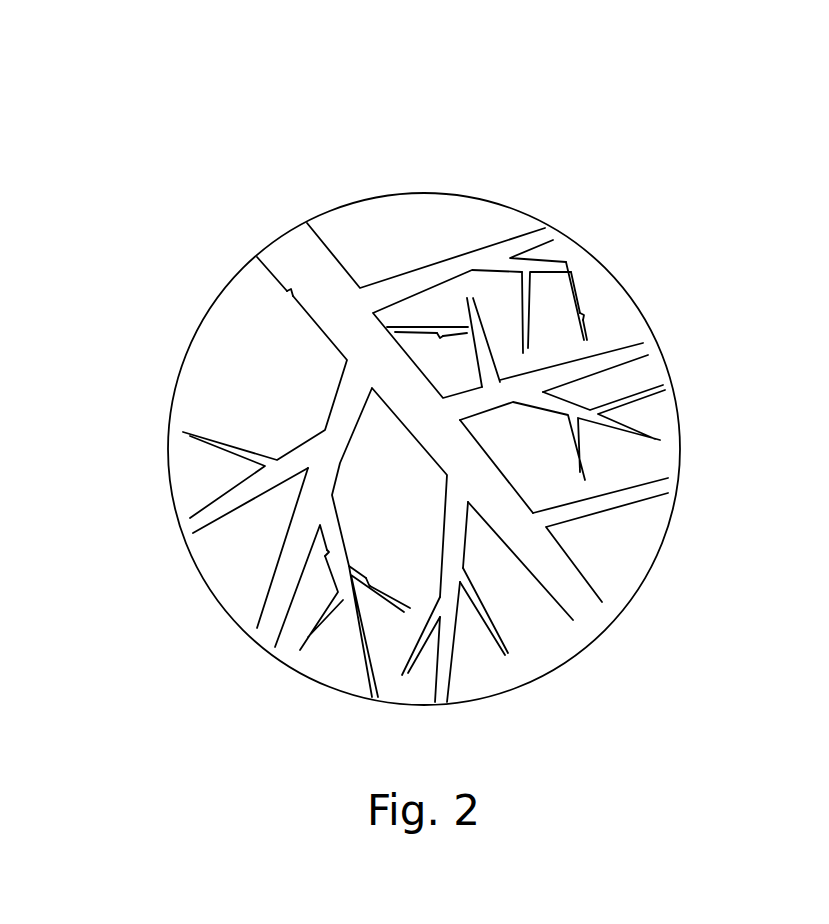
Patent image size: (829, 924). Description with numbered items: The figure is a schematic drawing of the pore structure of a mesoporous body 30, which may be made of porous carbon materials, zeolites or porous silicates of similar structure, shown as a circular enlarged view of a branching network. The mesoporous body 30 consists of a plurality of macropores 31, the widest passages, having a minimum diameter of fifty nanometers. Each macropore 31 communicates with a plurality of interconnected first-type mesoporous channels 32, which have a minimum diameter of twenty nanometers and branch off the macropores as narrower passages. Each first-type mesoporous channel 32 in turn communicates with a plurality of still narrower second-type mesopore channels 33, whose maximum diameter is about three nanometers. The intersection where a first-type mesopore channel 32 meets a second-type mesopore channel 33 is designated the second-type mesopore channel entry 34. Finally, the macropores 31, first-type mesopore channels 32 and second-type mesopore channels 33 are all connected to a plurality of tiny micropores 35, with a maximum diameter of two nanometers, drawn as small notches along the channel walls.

The mesoporous body 30 is at (400, 193).
The macropore 31 is at (285, 242).
The first-type mesoporous channel 32 is at (232, 508).
The second-type mesopore channel 33 is at (577, 290).
The second-type mesopore channel entry 34 is at (567, 268).
The micropore 35 is at (289, 293).